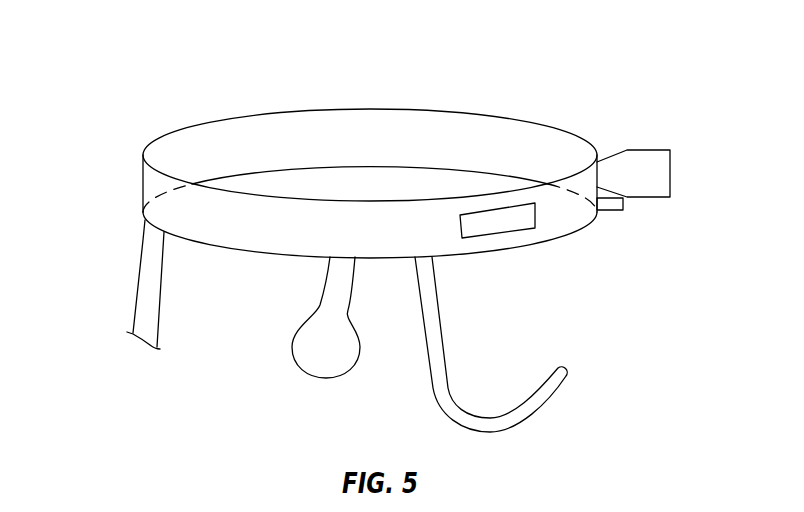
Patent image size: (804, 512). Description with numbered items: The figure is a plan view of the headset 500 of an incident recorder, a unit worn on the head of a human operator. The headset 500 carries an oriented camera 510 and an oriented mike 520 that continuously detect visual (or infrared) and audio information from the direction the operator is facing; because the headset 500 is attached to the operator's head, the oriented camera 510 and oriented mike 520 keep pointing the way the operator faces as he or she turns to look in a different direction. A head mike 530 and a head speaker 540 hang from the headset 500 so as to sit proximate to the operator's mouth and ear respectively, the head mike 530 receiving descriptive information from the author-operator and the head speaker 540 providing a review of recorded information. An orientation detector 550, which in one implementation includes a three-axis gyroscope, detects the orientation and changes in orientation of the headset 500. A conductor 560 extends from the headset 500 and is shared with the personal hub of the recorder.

The headset 500 is at (121, 54).
The oriented camera 510 is at (654, 150).
The oriented mike 520 is at (613, 210).
The head mike 530 is at (548, 406).
The head speaker 540 is at (312, 378).
The orientation detector 550 is at (500, 235).
The conductor 560 is at (135, 286).